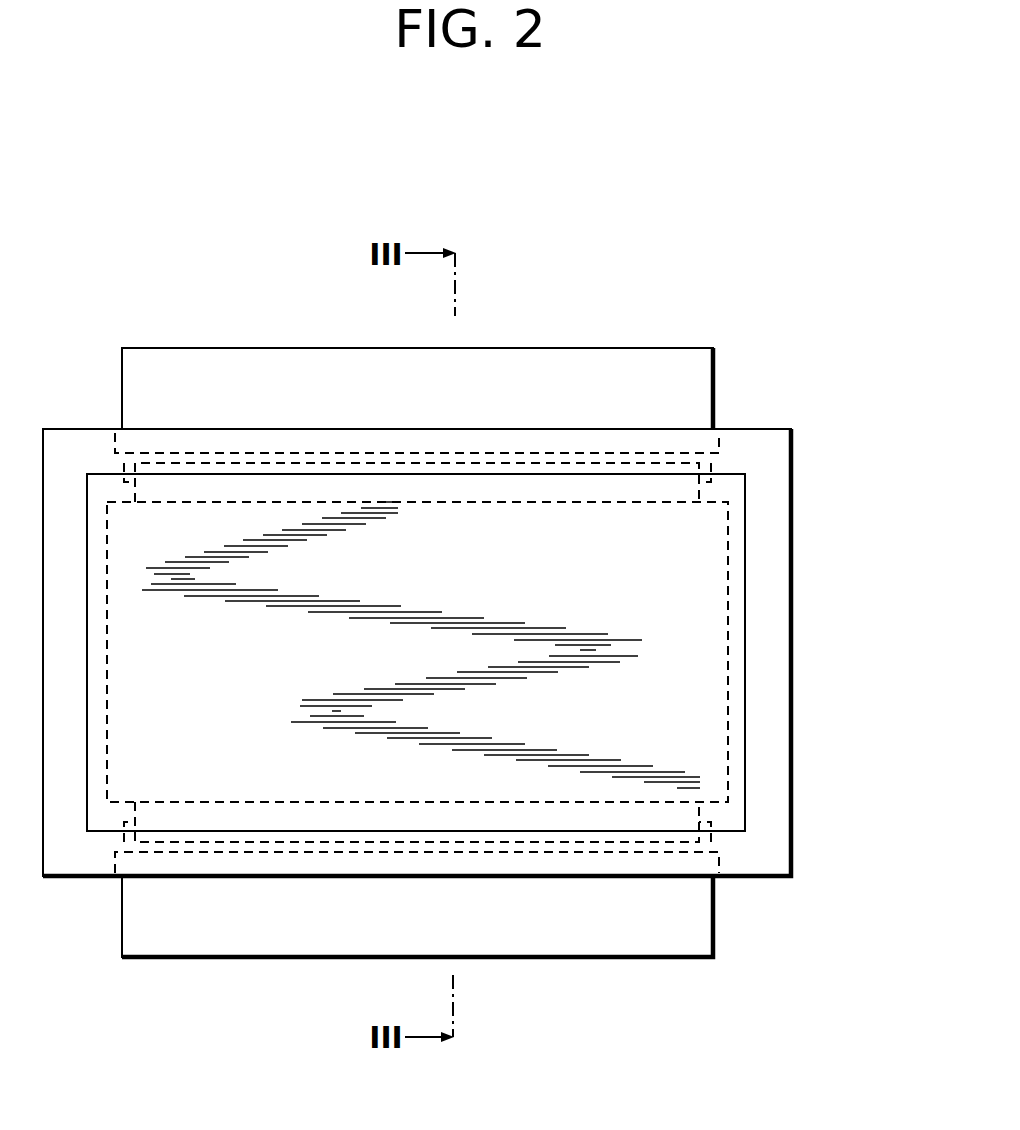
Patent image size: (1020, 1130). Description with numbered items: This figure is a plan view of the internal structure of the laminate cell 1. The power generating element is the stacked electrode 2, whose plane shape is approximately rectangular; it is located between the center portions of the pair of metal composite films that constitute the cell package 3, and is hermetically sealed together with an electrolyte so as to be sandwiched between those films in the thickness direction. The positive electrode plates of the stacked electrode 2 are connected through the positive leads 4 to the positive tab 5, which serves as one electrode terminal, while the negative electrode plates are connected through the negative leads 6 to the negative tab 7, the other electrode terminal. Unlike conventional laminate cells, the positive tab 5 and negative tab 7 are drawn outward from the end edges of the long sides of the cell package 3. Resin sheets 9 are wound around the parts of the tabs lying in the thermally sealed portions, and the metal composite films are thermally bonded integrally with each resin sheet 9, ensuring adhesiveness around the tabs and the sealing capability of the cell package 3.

The laminate cell 1 is at (840, 308).
The stacked electrode 2 is at (708, 543).
The cell package 3 is at (772, 796).
The positive leads 4 is at (195, 487).
The positive tab 5 is at (597, 362).
The negative leads 6 is at (199, 816).
The negative tab 7 is at (578, 942).
The resin sheets 9 is at (667, 443).